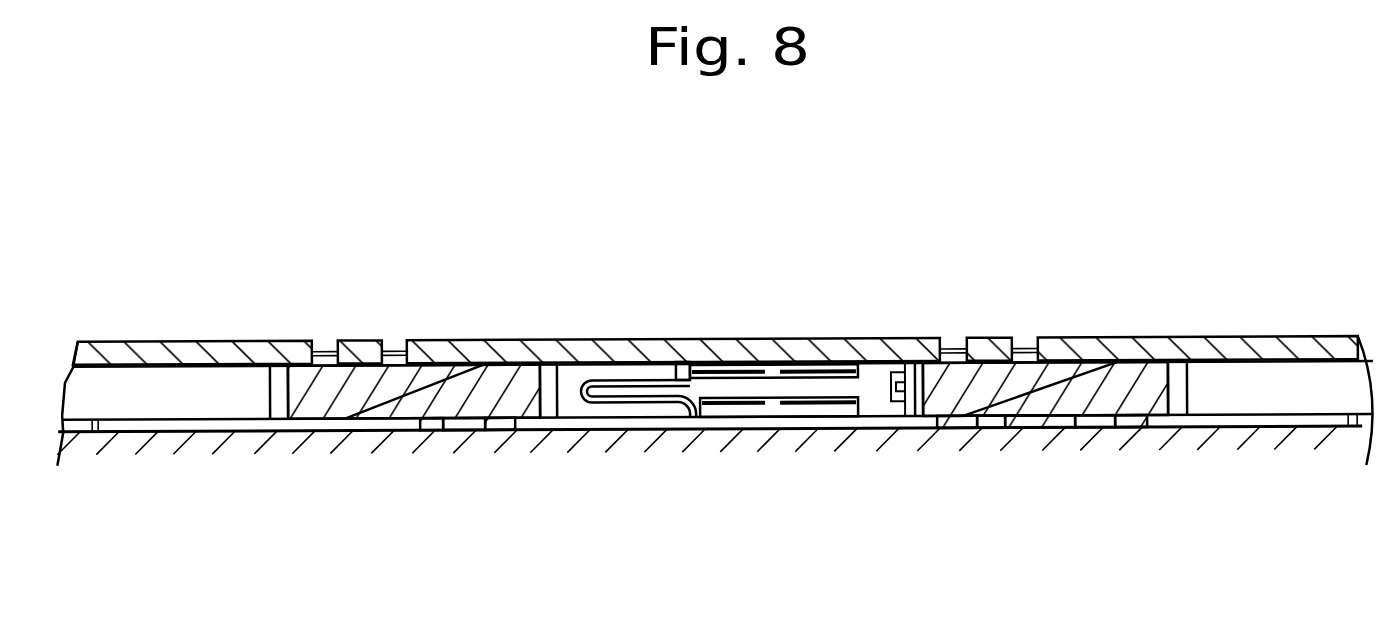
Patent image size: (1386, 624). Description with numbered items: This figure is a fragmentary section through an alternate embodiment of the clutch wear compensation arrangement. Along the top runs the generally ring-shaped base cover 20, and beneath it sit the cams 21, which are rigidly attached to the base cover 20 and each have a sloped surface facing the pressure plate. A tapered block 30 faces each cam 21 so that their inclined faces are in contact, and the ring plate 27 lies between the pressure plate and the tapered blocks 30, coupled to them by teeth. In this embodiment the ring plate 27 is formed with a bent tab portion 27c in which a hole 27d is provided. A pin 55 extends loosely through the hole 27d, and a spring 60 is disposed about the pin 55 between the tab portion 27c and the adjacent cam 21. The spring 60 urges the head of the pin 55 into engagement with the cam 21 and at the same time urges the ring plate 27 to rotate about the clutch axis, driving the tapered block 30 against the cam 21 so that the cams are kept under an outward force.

The base cover 20 is at (578, 350).
The cam 21 is at (933, 378).
The ring plate 27 is at (565, 420).
The bent tab portion 27c is at (682, 360).
The hole 27d is at (697, 418).
The tapered block 30 is at (1103, 390).
The pin 55 is at (757, 392).
The spring 60 is at (835, 405).